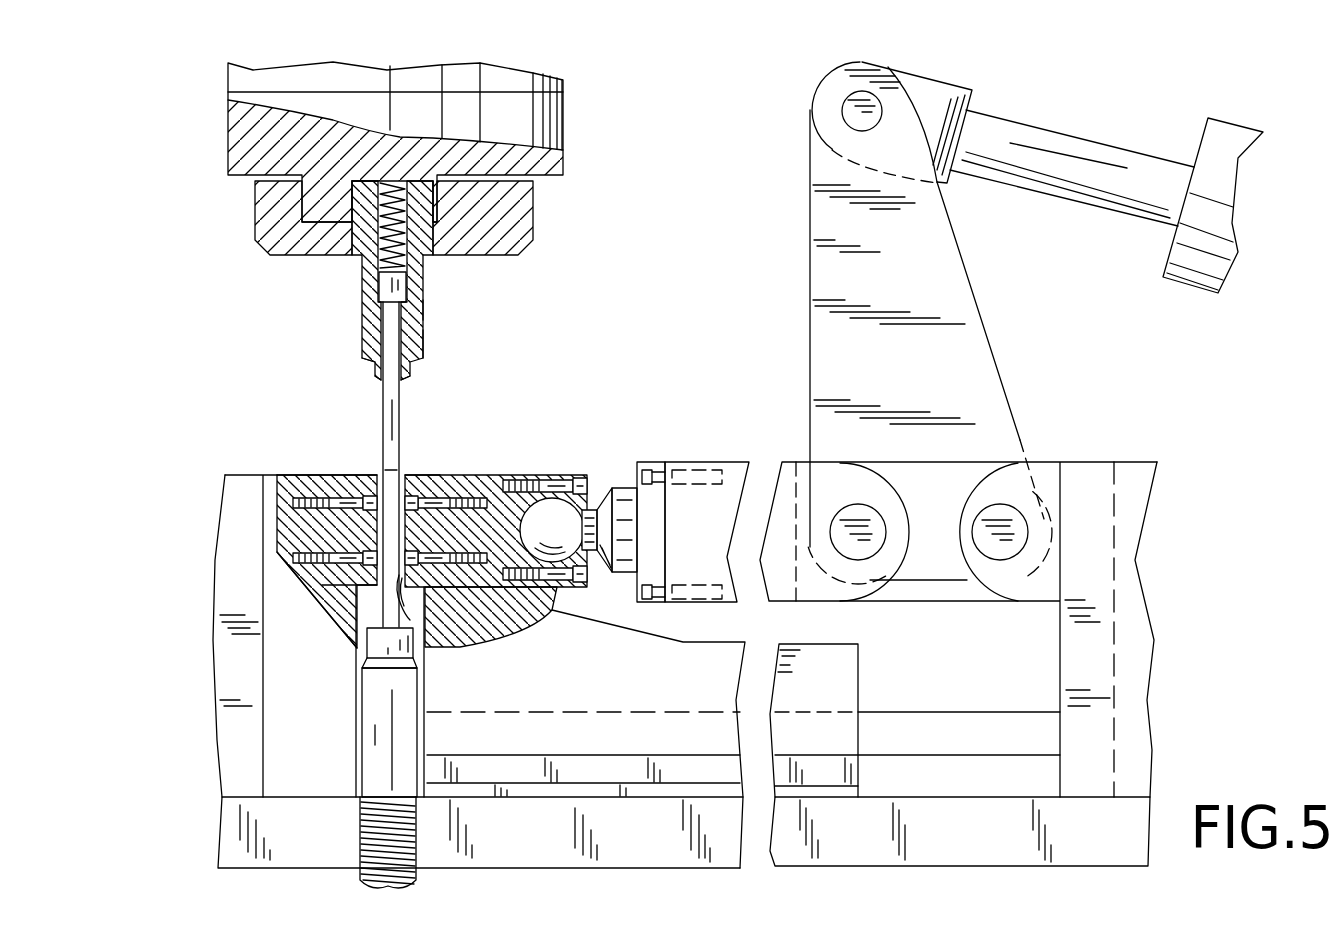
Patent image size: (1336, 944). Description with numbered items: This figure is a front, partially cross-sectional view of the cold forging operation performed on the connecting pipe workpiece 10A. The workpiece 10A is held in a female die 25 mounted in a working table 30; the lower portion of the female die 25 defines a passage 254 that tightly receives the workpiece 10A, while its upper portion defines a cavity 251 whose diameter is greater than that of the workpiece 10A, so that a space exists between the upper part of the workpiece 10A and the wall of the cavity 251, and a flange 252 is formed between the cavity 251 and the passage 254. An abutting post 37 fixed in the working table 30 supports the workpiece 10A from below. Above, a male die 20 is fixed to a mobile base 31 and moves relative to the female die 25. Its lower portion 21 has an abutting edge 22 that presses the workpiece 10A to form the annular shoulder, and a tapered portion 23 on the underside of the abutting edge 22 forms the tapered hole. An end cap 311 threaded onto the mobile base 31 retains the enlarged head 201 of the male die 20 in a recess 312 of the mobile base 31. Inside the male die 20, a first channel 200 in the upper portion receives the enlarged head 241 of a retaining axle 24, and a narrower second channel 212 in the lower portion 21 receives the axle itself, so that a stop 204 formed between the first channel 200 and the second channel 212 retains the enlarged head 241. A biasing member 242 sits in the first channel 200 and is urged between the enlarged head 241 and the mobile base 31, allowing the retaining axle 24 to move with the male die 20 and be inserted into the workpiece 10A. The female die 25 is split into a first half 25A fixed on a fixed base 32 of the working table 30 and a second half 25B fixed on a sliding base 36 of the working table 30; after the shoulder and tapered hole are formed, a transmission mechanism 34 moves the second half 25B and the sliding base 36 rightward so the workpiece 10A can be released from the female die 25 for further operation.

The mobile base 31 is at (553, 158).
The recess 312 is at (432, 175).
The end cap 311 is at (525, 218).
The first channel 200 is at (377, 404).
The male die 20 is at (377, 298).
The enlarged head 201 is at (367, 190).
The stop 204 is at (421, 308).
The second channel 212 is at (423, 356).
The lower portion 21 is at (365, 365).
The abutting edge 22 is at (380, 382).
The tapered portion 23 is at (407, 385).
The biasing member 242 is at (423, 266).
The enlarged head 241 is at (380, 288).
The retaining axle 24 is at (386, 443).
The female die 25 is at (447, 553).
The first half 25A is at (261, 554).
The second half 25B is at (512, 555).
The cavity 251 is at (403, 473).
The flange 252 is at (326, 473).
The passage 254 is at (405, 583).
The workpiece 10A is at (355, 647).
The abutting post 37 is at (373, 702).
The fixed base 32 is at (280, 747).
The working table 30 is at (507, 850).
The transmission mechanism 34 is at (794, 438).
The sliding base 36 is at (827, 757).